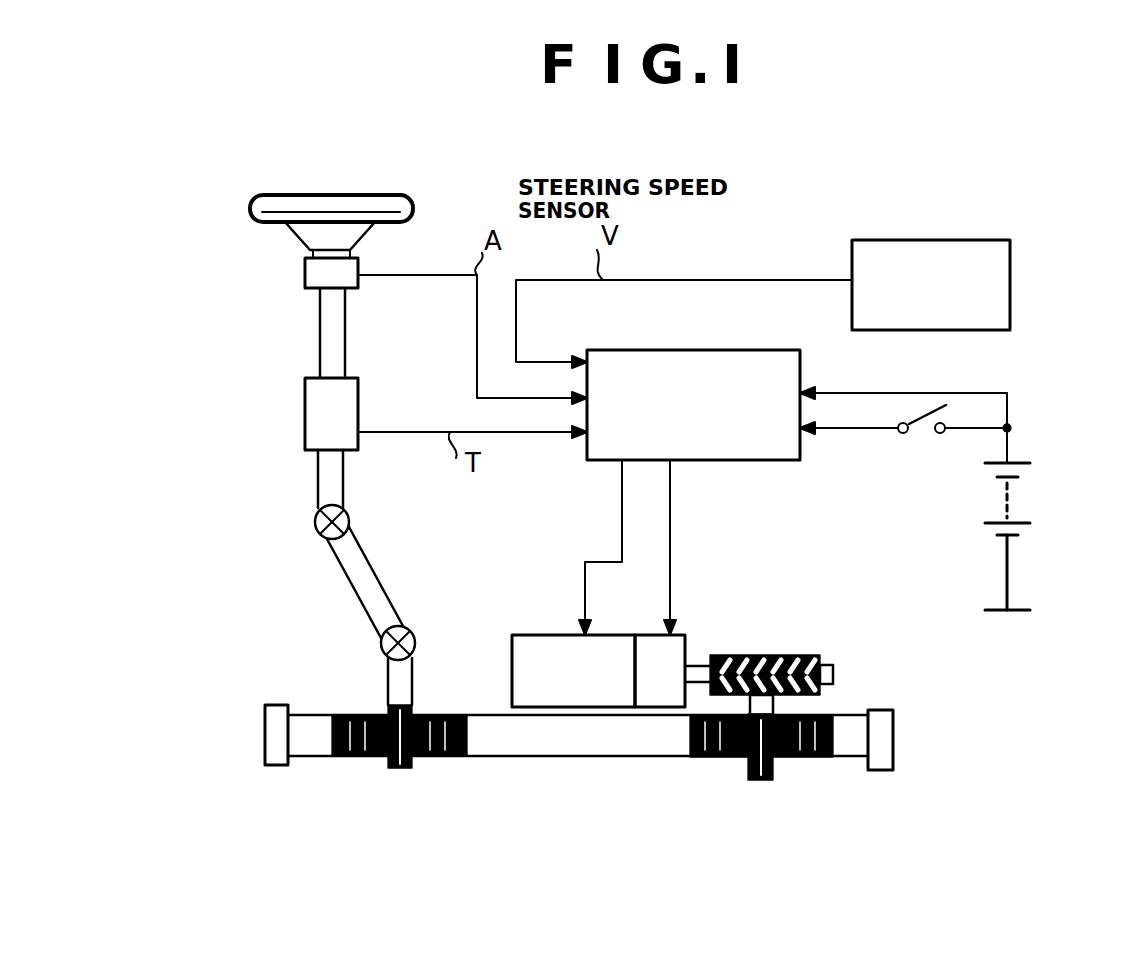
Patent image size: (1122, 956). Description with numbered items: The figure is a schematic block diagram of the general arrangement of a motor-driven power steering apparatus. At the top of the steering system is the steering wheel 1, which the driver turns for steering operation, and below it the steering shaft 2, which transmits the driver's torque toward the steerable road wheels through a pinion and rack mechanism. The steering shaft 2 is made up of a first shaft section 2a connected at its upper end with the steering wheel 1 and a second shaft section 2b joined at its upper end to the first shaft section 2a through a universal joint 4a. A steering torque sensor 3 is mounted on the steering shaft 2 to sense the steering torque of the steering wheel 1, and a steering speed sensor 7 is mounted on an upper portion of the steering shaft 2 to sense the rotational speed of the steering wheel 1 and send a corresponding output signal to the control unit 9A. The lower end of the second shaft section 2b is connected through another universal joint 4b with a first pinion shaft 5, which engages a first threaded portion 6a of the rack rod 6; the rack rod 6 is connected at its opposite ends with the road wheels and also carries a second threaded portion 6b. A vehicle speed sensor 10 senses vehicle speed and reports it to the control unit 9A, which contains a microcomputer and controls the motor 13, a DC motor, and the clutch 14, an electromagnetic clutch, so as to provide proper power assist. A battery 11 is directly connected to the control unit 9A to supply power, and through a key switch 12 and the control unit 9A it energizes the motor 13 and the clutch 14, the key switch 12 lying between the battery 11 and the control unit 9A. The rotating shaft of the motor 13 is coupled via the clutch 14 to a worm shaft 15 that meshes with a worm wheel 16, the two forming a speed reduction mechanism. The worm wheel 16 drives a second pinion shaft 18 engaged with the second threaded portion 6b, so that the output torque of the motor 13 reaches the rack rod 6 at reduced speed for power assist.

The steering wheel 1 is at (405, 195).
The steering shaft 2 is at (320, 398).
The first shaft section 2a is at (345, 322).
The second shaft section 2b is at (365, 573).
The steering torque sensor 3 is at (305, 418).
The universal joint 4a is at (314, 525).
The universal joint 4b is at (381, 646).
The first pinion shaft 5 is at (393, 772).
The rack rod 6 is at (579, 768).
The first threaded portion 6a is at (440, 757).
The second threaded portion 6b is at (795, 758).
The steering speed sensor 7 is at (360, 270).
The control unit 9A is at (748, 350).
The vehicle speed sensor 10 is at (898, 240).
The battery 11 is at (1020, 492).
The key switch 12 is at (924, 433).
The motor 13 is at (528, 635).
The clutch 14 is at (686, 635).
The worm shaft 15 is at (835, 675).
The worm wheel 16 is at (815, 655).
The second pinion shaft 18 is at (762, 783).